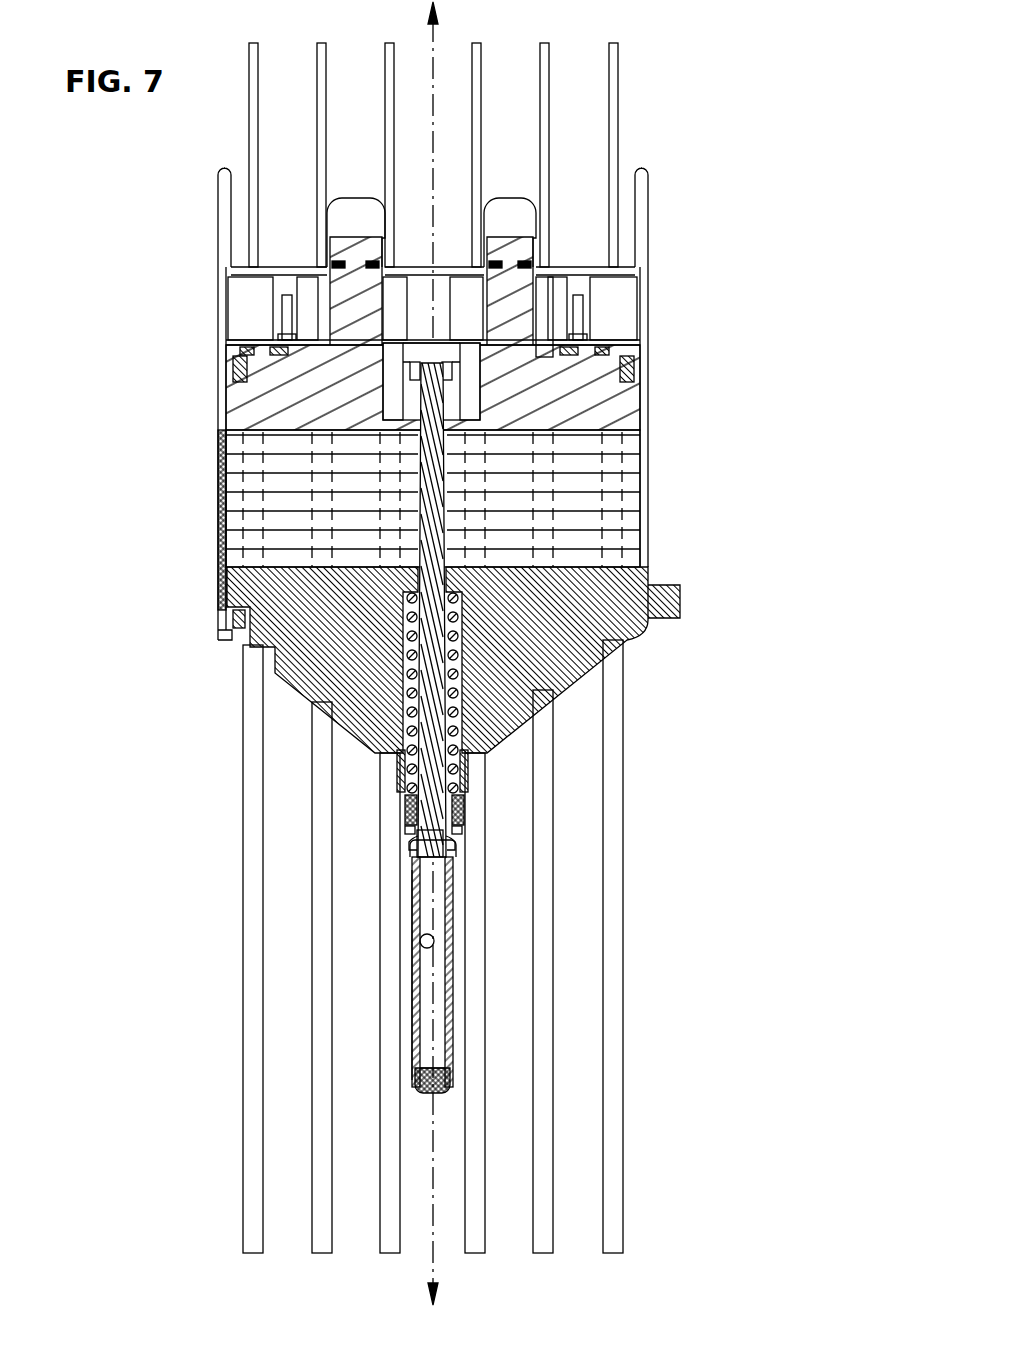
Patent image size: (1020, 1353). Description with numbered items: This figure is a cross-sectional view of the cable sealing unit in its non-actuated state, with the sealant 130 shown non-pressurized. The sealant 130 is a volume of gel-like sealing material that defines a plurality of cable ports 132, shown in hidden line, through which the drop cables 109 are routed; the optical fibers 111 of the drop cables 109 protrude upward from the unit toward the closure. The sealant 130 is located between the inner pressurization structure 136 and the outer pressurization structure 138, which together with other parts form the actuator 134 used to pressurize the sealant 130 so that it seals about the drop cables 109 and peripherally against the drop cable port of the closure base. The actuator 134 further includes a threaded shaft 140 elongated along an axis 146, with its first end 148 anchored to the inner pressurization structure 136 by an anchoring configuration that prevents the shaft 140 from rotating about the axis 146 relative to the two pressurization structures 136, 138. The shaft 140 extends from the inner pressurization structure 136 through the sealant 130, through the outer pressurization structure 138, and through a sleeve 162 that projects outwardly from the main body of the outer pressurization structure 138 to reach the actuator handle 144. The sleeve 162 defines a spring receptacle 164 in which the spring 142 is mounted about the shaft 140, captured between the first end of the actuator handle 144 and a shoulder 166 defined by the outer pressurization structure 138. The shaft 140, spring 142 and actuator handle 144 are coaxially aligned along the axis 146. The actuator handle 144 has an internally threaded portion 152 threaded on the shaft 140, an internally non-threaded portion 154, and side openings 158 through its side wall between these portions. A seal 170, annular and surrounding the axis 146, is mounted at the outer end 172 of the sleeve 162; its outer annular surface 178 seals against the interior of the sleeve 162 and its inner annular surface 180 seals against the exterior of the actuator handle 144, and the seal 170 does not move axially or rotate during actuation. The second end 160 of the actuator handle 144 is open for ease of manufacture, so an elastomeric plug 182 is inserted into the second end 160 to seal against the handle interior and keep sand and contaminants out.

The axis 146 is at (437, 46).
The optical fibers 111 is at (545, 98).
The first end 148 is at (525, 242).
The inner pressurization structure 136 is at (283, 398).
The sealant 130 is at (283, 487).
The cable ports 132 is at (550, 468).
The threaded shaft 140 is at (437, 553).
The outer pressurization structure 138 is at (255, 592).
The shoulder 166 is at (452, 600).
The spring 142 is at (405, 660).
The spring receptacle 164 is at (470, 700).
The sleeve 162 is at (397, 780).
The outer end 172 is at (408, 826).
The outer annular surface 178 is at (462, 820).
The inner annular surface 180 is at (452, 843).
The seal 170 is at (395, 835).
The side openings 158 is at (456, 856).
The internally threaded portion 152 is at (420, 822).
The internally non-threaded portion 154 is at (419, 950).
The drop cables 109 is at (318, 1048).
The actuator handle 144 is at (412, 1050).
The actuator 134 is at (458, 1033).
The plug 182 is at (418, 1093).
The second end 160 is at (452, 1093).